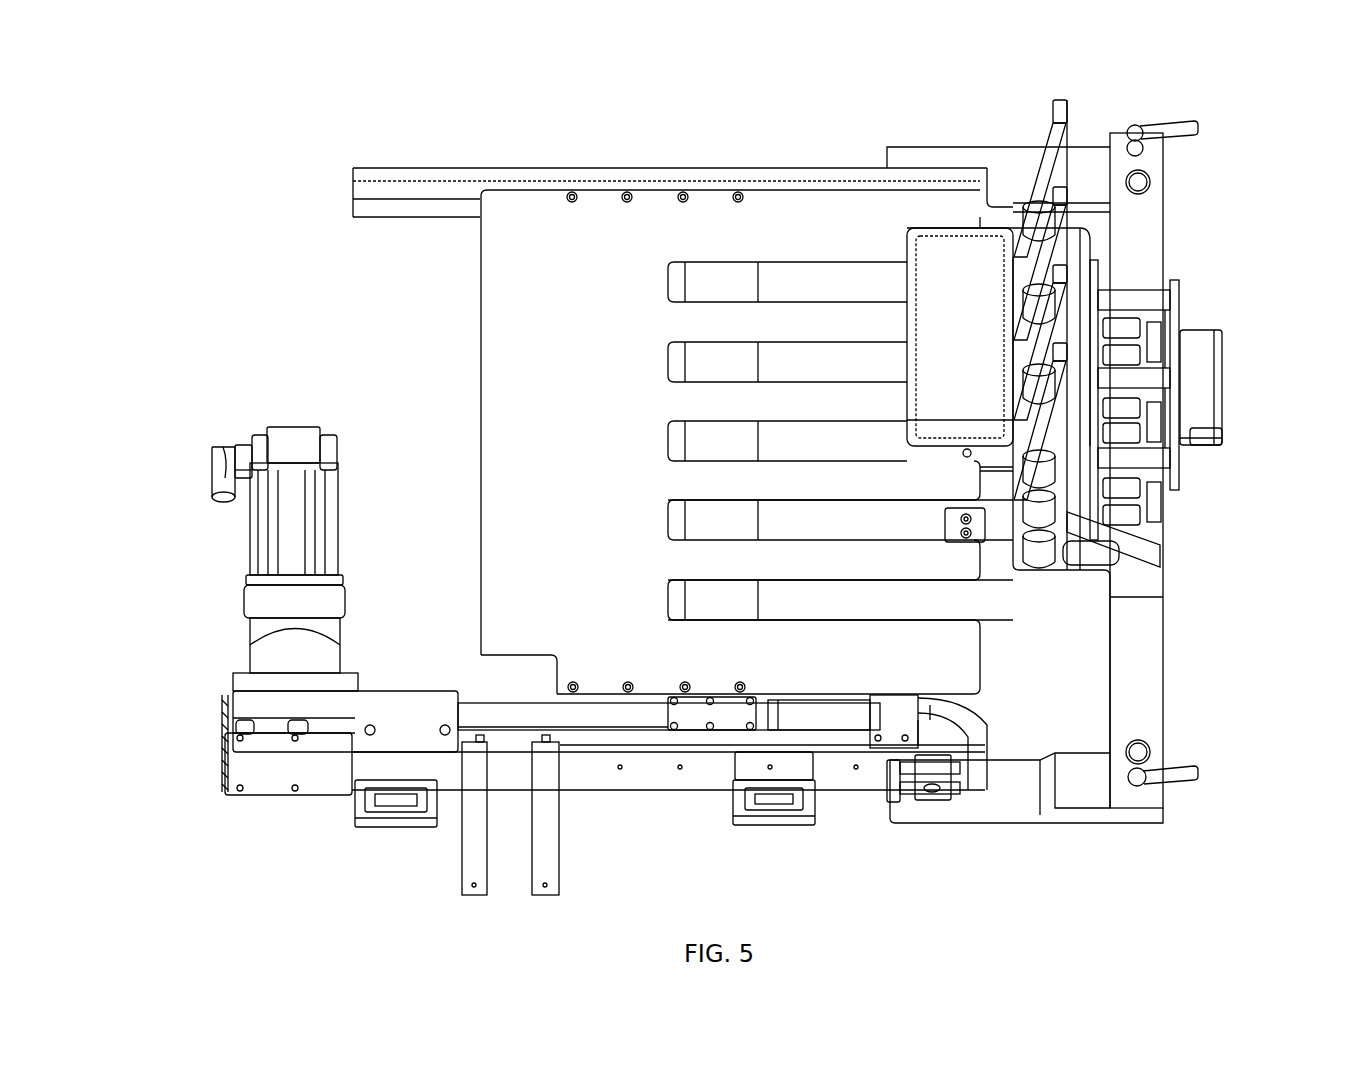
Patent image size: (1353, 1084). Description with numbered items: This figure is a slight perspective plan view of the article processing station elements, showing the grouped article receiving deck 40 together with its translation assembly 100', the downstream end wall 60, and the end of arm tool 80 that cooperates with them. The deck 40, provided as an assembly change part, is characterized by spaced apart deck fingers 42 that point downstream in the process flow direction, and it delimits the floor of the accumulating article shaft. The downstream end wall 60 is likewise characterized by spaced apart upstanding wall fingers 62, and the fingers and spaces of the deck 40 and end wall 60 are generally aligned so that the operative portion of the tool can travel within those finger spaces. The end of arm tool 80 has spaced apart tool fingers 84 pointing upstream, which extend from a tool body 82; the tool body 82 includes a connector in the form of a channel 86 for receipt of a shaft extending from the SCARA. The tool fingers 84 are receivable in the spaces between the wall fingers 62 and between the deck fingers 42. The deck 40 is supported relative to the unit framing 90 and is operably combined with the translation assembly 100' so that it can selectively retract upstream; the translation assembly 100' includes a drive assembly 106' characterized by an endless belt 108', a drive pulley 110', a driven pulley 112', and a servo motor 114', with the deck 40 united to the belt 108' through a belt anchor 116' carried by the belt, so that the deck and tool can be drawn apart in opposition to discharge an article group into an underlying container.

The translation assembly 100' is at (465, 268).
The grouped article receiving deck 40 is at (570, 275).
The deck fingers 42 is at (796, 253).
The downstream end wall 60 is at (1088, 88).
The wall fingers 62 is at (1068, 173).
The end of arm tool (EOAT) 80 is at (1200, 246).
The tool body 82 is at (1180, 316).
The tool fingers 84 is at (952, 522).
The channel 86 is at (1203, 380).
The unit framing 90 is at (1023, 800).
The drive assembly 106' is at (182, 443).
The endless belt 108' is at (609, 705).
The drive pulley 110' is at (390, 795).
The driven pulley 112' is at (979, 744).
The servo motor 114' is at (239, 559).
The belt anchor 116' is at (732, 770).